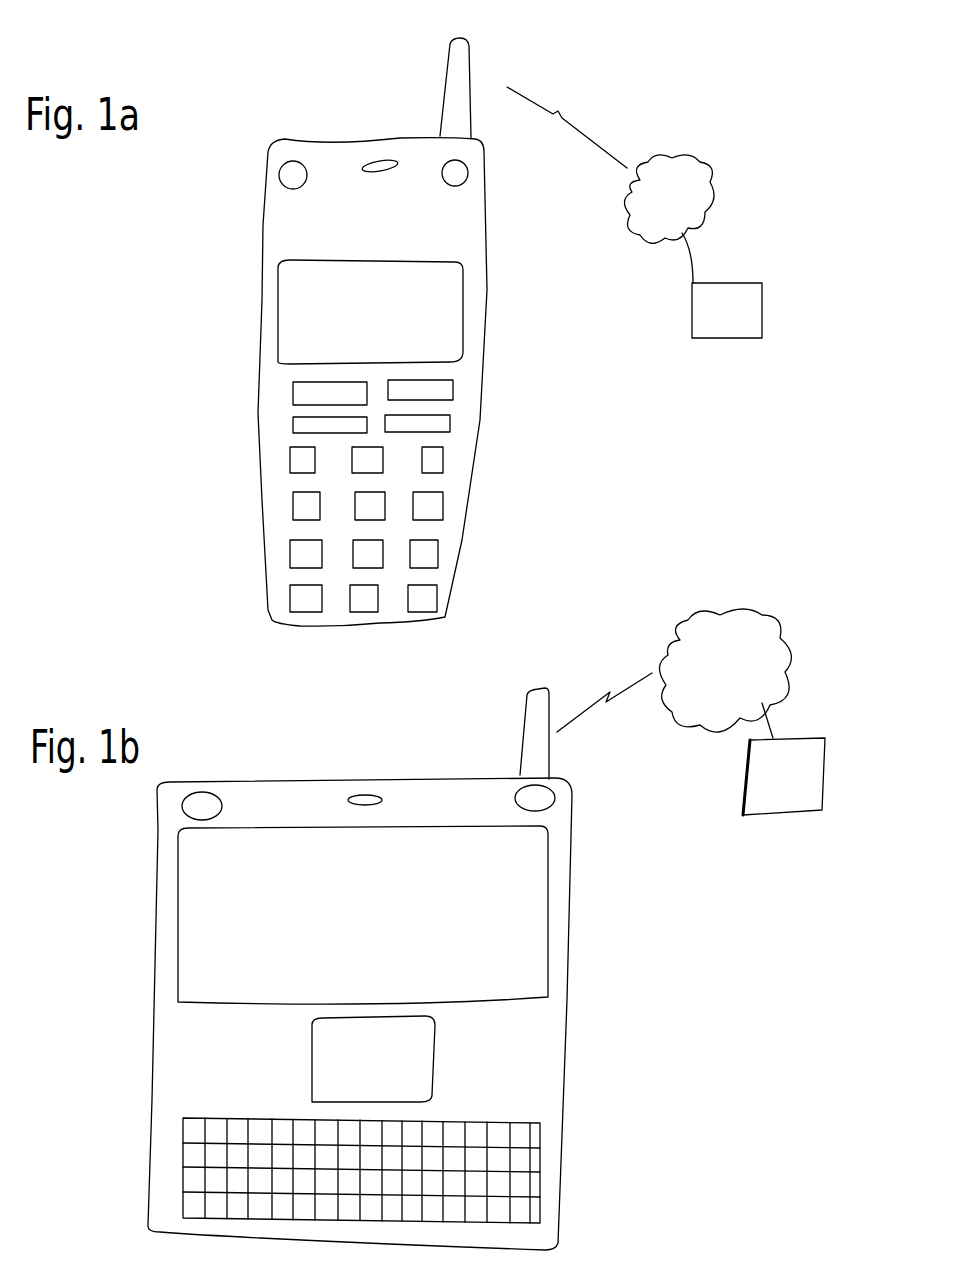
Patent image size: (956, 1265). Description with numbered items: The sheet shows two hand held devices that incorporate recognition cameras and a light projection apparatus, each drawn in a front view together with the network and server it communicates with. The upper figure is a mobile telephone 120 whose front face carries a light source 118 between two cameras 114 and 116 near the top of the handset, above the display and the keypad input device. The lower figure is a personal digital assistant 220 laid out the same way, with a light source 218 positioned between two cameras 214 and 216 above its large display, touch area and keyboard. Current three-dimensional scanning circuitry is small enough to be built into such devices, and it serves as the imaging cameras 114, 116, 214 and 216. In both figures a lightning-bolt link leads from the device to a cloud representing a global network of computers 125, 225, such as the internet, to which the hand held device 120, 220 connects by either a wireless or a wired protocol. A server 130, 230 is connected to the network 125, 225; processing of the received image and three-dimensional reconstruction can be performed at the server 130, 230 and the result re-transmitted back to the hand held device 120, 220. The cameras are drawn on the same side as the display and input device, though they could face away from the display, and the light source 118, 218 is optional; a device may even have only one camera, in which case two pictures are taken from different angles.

In FIG. 1A, the camera 114 is at (279, 172).
In FIG. 1A, the camera 116 is at (468, 172).
In FIG. 1A, the light source 118 is at (371, 171).
In FIG. 1A, the mobile telephone 120 is at (485, 337).
In FIG. 1A, the global network of computers 125 is at (704, 167).
In FIG. 1A, the server 130 is at (720, 338).
In FIG. 1B, the camera 214 is at (182, 803).
In FIG. 1B, the camera 216 is at (555, 796).
In FIG. 1B, the light source 218 is at (372, 796).
In FIG. 1B, the personal digital assistant 220 is at (569, 998).
In FIG. 1B, the global network of computers 225 is at (765, 608).
In FIG. 1B, the server 230 is at (782, 815).